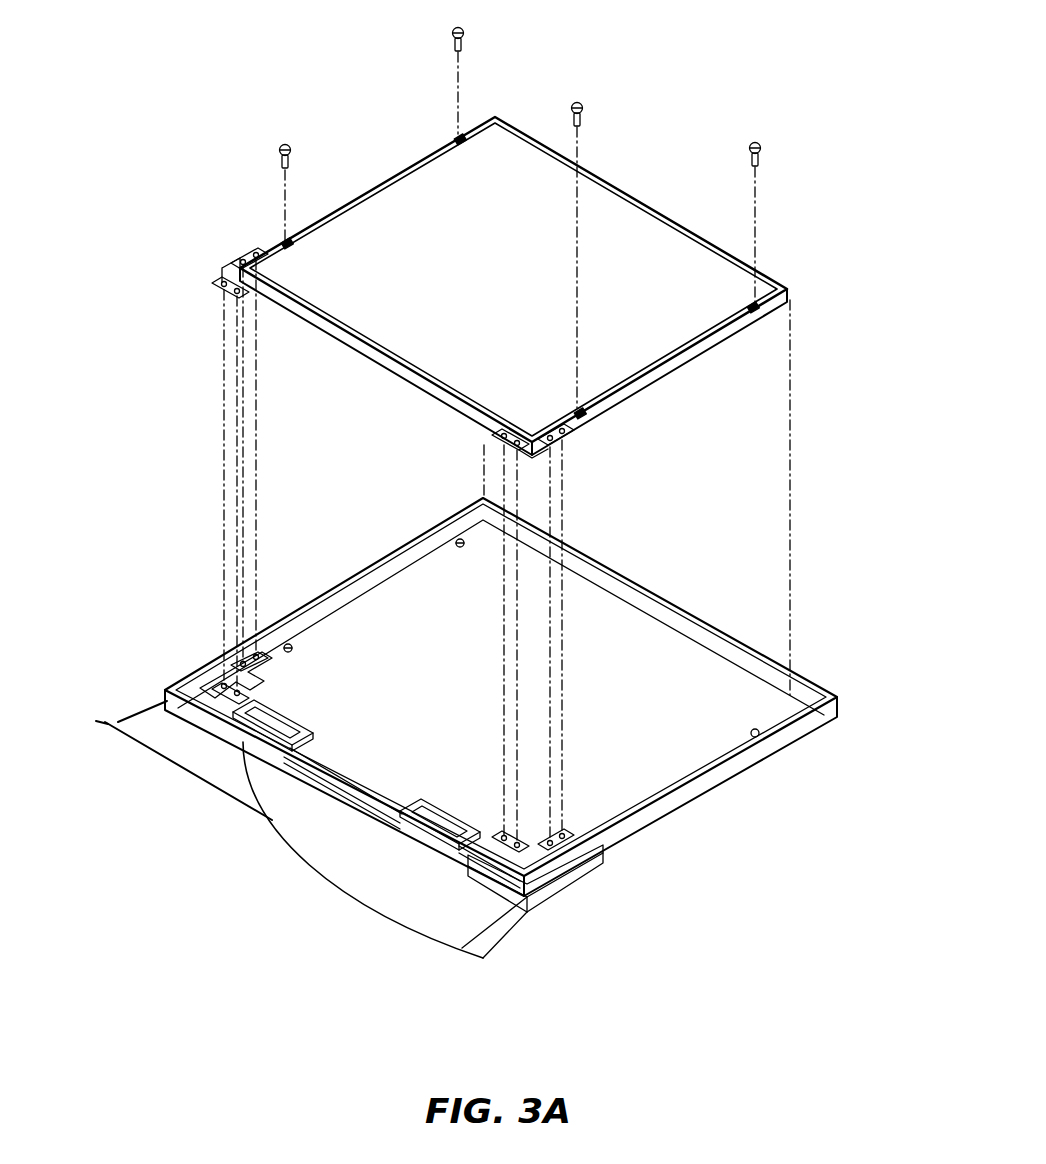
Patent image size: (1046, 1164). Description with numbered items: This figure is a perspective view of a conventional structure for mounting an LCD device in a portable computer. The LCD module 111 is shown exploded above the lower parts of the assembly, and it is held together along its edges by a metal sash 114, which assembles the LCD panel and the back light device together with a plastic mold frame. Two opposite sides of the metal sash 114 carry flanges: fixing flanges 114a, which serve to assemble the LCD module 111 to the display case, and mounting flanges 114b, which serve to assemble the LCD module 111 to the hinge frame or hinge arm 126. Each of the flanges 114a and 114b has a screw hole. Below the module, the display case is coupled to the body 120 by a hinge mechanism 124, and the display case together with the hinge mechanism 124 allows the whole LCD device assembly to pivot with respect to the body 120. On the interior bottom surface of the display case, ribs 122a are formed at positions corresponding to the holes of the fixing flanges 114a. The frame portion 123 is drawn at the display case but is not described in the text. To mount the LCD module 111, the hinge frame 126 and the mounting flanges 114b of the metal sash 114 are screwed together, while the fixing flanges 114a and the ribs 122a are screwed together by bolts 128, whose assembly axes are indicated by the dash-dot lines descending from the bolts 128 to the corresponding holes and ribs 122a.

The LCD module 111 is at (579, 286).
The metal sash 114 is at (803, 302).
The fixing flange 114a is at (455, 141).
The mounting flange 114b is at (220, 286).
The body 120 is at (485, 928).
The rib 122a is at (288, 644).
The frame 123 is at (825, 712).
The hinge mechanism 124 is at (243, 748).
The hinge frame 126 is at (228, 702).
The bolt 128 is at (452, 33).